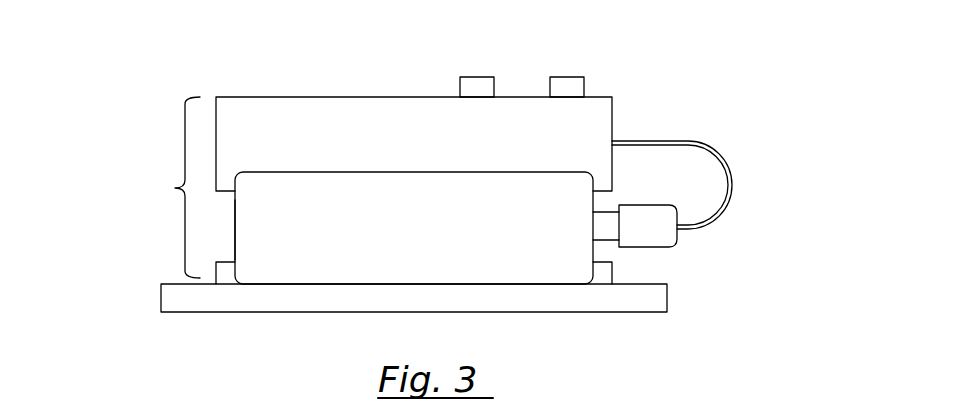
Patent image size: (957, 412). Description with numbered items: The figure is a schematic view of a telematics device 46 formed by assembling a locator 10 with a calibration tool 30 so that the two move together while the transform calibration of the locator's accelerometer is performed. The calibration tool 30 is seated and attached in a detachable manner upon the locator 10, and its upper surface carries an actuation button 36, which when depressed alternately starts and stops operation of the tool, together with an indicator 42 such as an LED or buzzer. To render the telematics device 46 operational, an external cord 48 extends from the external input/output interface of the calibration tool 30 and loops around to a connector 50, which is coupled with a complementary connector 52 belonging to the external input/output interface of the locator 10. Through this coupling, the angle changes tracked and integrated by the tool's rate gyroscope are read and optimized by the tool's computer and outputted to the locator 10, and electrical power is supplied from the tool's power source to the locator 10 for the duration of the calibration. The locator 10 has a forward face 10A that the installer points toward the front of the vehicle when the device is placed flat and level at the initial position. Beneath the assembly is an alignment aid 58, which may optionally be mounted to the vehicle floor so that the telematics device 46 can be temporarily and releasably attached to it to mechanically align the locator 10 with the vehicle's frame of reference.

The locator 10 is at (273, 268).
The forward face 10A is at (238, 220).
The calibration tool 30 is at (335, 108).
The actuation button 36 is at (562, 82).
The indicator 42 is at (479, 83).
The telematics device 46 is at (177, 188).
The external cord 48 is at (725, 170).
The connector 50 is at (654, 235).
The complementary connector 52 is at (602, 217).
The alignment aid 58 is at (530, 299).